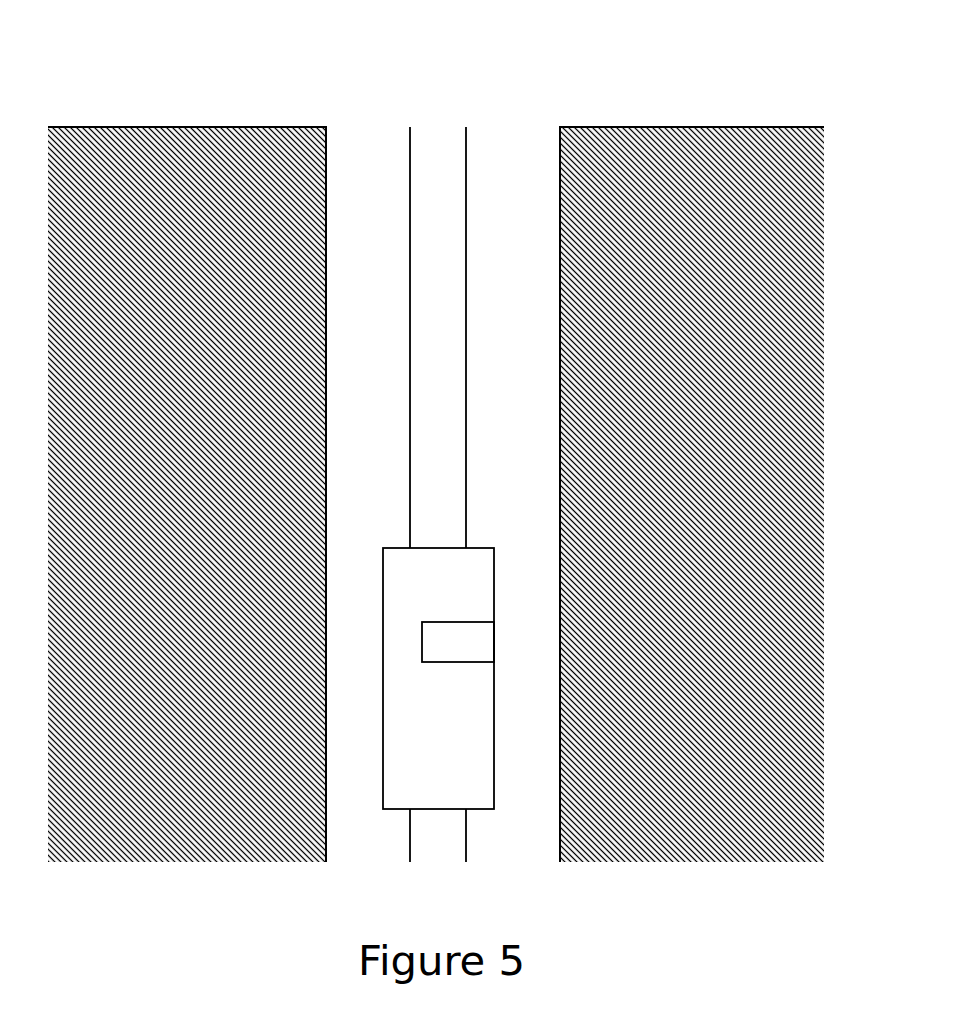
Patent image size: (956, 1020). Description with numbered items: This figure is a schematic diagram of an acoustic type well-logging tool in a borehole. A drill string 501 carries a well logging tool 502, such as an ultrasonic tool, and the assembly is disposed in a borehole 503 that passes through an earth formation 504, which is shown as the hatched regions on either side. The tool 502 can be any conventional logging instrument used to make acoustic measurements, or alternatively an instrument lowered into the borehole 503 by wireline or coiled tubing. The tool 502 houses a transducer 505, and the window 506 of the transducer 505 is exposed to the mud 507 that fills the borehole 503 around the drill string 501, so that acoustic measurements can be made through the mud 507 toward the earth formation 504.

The drill string 501 is at (466, 155).
The well logging tool 502 is at (482, 548).
The borehole 503 is at (368, 135).
The earth formation 504 is at (436, 494).
The transducer 505 is at (453, 622).
The transducer window 506 is at (493, 643).
The mud 507 is at (366, 392).